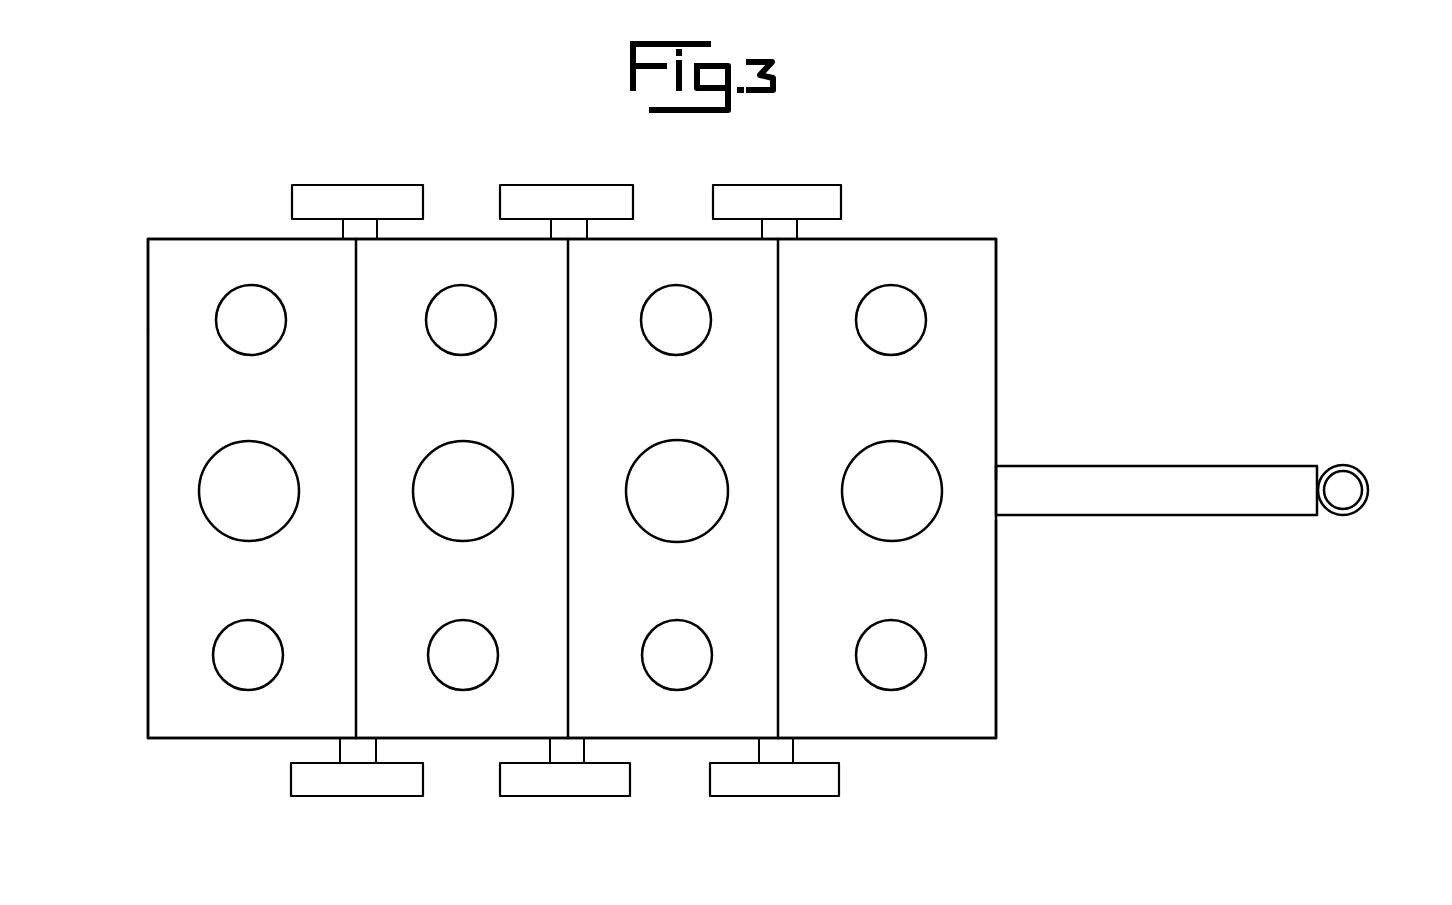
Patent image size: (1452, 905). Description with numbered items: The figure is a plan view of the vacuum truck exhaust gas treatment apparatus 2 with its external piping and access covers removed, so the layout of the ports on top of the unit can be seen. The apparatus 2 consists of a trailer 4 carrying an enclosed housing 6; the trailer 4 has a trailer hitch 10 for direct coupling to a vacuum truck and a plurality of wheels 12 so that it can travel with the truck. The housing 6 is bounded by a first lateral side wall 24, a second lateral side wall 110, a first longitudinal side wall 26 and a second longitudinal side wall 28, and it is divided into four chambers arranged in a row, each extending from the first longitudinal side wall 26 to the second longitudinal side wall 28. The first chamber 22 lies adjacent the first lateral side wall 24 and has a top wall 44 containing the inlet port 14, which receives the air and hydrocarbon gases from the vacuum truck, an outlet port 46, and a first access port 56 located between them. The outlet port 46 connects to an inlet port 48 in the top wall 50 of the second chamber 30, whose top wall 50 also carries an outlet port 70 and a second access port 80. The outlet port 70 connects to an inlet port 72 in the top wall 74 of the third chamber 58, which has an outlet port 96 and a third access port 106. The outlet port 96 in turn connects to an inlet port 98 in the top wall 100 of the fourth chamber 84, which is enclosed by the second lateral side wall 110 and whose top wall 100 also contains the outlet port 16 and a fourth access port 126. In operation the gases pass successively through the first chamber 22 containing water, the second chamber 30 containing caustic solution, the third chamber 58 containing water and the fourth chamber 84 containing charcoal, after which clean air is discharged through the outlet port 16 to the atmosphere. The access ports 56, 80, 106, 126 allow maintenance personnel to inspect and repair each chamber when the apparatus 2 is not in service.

The vacuum truck exhaust gas treatment apparatus 2 is at (980, 232).
The trailer 4 is at (1090, 475).
The enclosed housing 6 is at (176, 228).
The trailer hitch 10 is at (1368, 485).
The wheels 12 is at (840, 779).
The inlet port 14 is at (912, 302).
The outlet port 16 is at (244, 330).
The first chamber 22 is at (903, 237).
The first lateral side wall 24 is at (998, 338).
The first longitudinal side wall 26 is at (962, 742).
The second longitudinal side wall 28 is at (228, 237).
The second chamber 30 is at (683, 740).
The top wall 44 is at (990, 665).
The outlet port 46 is at (908, 635).
The inlet port 48 is at (688, 632).
The top wall 50 is at (665, 243).
The first access port 56 is at (922, 465).
The third chamber 58 is at (467, 740).
The outlet port 70 is at (693, 308).
The inlet port 72 is at (470, 303).
The top wall 74 is at (448, 243).
The second access port 80 is at (705, 465).
The fourth chamber 84 is at (222, 740).
The outlet port 96 is at (482, 635).
The inlet port 98 is at (268, 630).
The top wall 100 is at (170, 668).
The third access port 106 is at (495, 478).
The second lateral side wall 110 is at (148, 450).
The fourth access port 126 is at (270, 470).